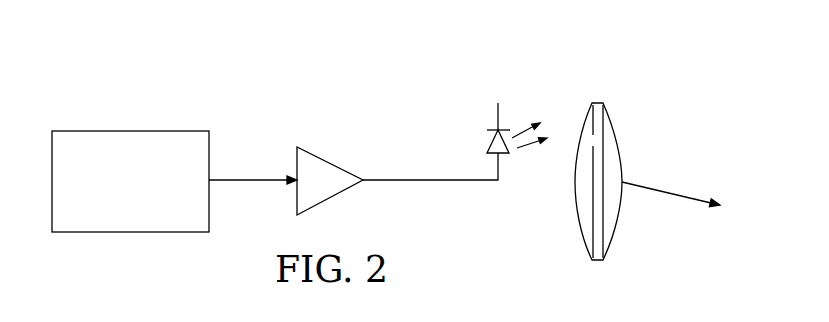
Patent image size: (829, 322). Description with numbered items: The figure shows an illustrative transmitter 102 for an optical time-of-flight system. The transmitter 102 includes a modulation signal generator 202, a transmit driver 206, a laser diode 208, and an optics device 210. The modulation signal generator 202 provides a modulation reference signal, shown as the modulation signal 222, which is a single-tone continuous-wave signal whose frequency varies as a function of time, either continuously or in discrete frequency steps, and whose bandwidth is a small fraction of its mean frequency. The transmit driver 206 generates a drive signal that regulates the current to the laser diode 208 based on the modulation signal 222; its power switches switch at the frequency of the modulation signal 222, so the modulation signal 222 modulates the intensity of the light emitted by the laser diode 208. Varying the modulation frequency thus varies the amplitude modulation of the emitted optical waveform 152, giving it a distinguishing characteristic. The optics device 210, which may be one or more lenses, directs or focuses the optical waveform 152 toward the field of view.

The transmitter 102 is at (557, 57).
The modulation signal generator 202 is at (128, 131).
The modulation signal 222 is at (258, 178).
The transmit driver 206 is at (331, 164).
The laser diode 208 is at (490, 145).
The optical waveform 152 is at (522, 145).
The optics device 210 is at (582, 220).